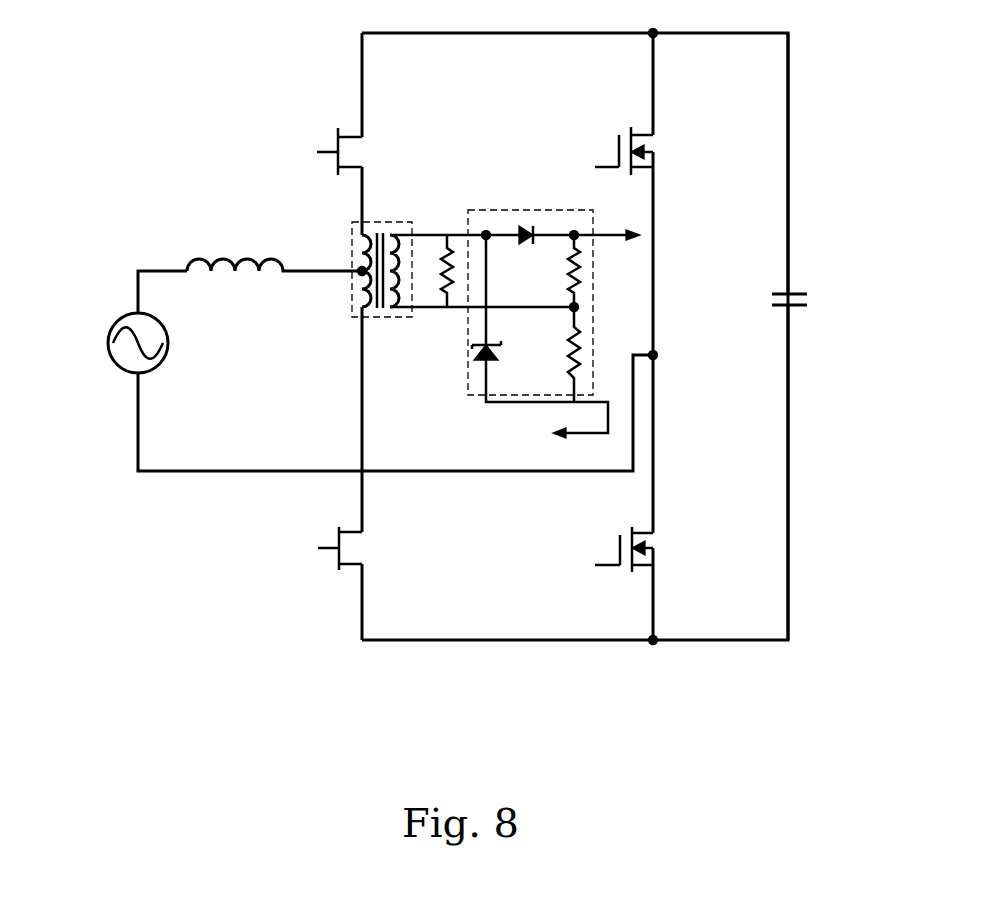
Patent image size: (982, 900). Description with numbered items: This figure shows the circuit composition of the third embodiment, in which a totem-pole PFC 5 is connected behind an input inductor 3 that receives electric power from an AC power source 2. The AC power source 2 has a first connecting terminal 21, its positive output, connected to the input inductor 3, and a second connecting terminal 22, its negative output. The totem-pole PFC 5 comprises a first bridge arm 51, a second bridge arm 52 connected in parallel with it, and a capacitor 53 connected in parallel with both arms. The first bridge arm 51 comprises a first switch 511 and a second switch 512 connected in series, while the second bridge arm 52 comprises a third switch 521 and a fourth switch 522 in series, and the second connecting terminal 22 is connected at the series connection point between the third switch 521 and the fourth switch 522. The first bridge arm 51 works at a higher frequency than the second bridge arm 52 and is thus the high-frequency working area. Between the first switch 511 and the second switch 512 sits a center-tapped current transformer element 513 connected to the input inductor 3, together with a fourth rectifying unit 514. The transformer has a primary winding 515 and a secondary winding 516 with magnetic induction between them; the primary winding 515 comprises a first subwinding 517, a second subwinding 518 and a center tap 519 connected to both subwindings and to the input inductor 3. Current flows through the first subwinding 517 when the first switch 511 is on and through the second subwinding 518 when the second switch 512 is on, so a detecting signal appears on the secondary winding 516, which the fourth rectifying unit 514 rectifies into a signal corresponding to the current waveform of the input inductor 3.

The AC power source 2 is at (112, 330).
The first connecting terminal 21 is at (136, 297).
The second connecting terminal 22 is at (136, 392).
The input inductor 3 is at (222, 258).
The totem-pole PFC 5 is at (614, 662).
The first bridge arm 51 is at (291, 353).
The first switch 511 is at (340, 128).
The second switch 512 is at (350, 572).
The center-tapped current transformer element 513 is at (349, 291).
The fourth rectifying unit 514 is at (503, 395).
The primary winding 515 is at (294, 315).
The secondary winding 516 is at (397, 238).
The first subwinding 517 is at (368, 235).
The second subwinding 518 is at (366, 300).
The center tap 519 is at (366, 264).
The second bridge arm 52 is at (684, 349).
The third switch 521 is at (655, 138).
The fourth switch 522 is at (657, 479).
The capacitor 53 is at (800, 310).